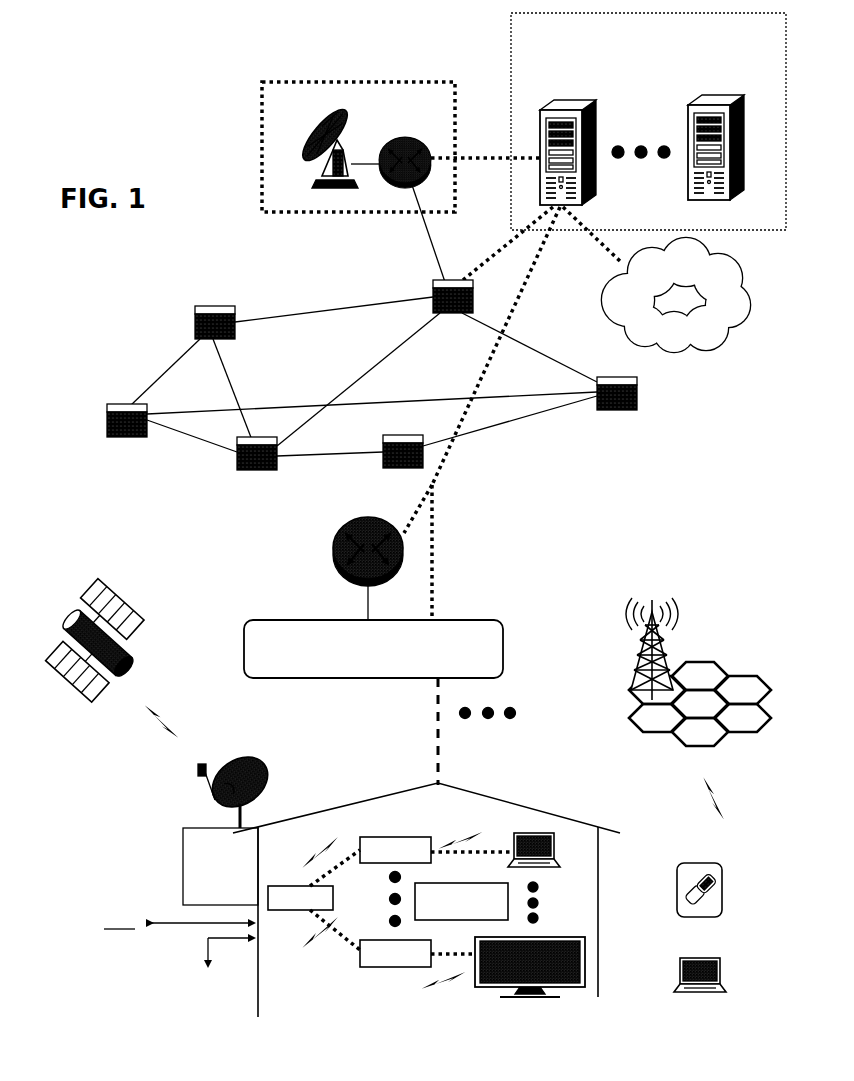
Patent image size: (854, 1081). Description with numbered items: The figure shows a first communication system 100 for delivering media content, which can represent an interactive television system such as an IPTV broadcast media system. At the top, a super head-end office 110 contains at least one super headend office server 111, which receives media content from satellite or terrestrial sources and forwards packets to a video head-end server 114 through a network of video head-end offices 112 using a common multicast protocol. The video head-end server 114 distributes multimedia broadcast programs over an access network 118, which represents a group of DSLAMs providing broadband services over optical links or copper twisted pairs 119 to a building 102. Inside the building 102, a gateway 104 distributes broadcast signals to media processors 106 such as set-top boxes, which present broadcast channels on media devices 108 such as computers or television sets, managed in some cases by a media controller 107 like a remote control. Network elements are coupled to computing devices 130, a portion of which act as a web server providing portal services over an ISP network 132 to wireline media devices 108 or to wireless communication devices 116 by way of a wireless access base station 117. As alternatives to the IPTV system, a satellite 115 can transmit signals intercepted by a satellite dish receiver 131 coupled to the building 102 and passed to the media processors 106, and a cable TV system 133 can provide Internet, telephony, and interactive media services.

The communication system 100 is at (117, 170).
The building 102 is at (440, 1033).
The gateway 104 is at (325, 908).
The media processor 106 is at (428, 861).
The media controller 107 is at (497, 911).
The media device 108 is at (538, 835).
The super head-end office 110 is at (262, 156).
The super headend office server 111 is at (385, 150).
The network of video head-end offices 112 is at (107, 422).
The video head-end server 114 is at (335, 553).
The satellite 115 is at (60, 650).
The wireless communication device 116 is at (722, 877).
The wireless access base station 117 is at (700, 672).
The access network 118 is at (503, 652).
The copper twisted pairs 119 is at (435, 758).
The computing devices 130 is at (714, 100).
The satellite dish receiver 131 is at (170, 829).
The ISP network 132 is at (694, 336).
The cable TV system 133 is at (190, 1031).